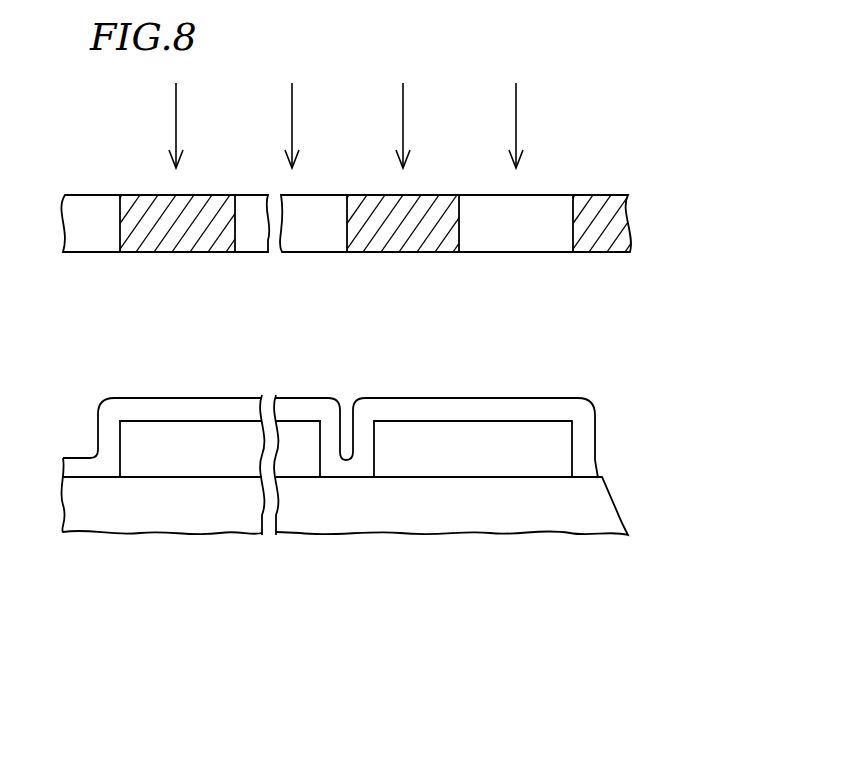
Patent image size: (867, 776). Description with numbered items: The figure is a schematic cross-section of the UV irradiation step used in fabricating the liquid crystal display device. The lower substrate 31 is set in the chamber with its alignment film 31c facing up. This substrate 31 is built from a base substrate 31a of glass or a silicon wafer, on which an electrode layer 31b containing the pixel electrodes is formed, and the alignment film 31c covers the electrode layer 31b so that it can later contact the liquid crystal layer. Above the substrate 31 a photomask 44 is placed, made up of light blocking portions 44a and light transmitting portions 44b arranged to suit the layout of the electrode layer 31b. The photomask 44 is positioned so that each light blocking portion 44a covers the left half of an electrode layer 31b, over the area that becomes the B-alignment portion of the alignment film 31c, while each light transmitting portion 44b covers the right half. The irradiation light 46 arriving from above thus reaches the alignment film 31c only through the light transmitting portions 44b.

The exposure light 46 is at (516, 112).
The photomask 44 is at (383, 253).
The light blocking portion 44a is at (428, 242).
The light transmitting portion 44b is at (325, 242).
The substrate 31 is at (391, 484).
The base substrate 31a is at (593, 518).
The electrode layer 31b is at (493, 463).
The alignment film 31c is at (585, 413).